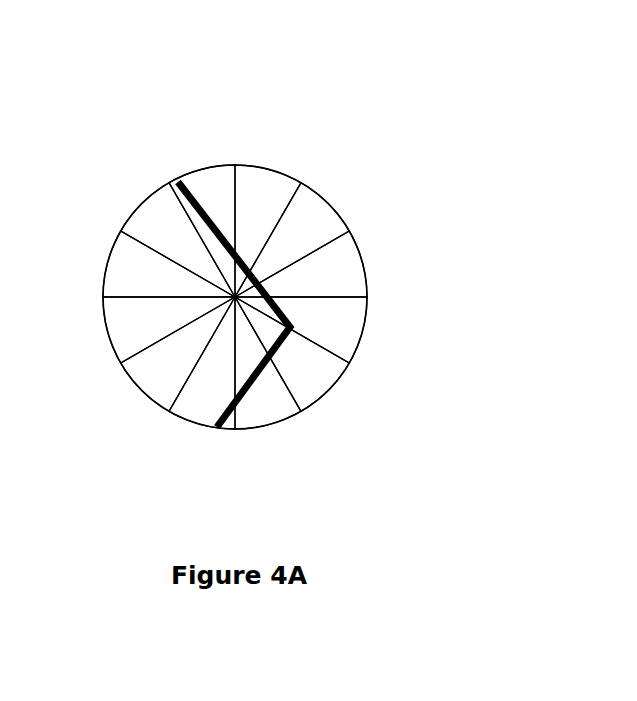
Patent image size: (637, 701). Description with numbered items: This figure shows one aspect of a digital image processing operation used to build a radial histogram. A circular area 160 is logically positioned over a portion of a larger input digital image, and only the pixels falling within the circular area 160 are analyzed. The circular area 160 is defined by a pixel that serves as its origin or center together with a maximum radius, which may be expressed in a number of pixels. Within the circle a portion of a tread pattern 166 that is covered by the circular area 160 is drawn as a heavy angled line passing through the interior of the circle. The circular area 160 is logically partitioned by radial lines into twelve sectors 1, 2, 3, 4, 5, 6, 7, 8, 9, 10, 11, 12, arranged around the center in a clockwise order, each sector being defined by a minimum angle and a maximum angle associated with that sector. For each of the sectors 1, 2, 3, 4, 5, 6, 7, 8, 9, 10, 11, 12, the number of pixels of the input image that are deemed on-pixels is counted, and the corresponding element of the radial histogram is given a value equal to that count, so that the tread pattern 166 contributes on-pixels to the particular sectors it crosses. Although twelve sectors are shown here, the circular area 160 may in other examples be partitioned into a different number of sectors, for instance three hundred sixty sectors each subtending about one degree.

The circular area 160 is at (111, 79).
The tread pattern 166 is at (290, 327).
The sector 1 is at (360, 248).
The sector 2 is at (333, 207).
The sector 3 is at (268, 167).
The sector 4 is at (194, 172).
The sector 5 is at (138, 203).
The sector 6 is at (108, 260).
The sector 7 is at (112, 330).
The sector 8 is at (135, 385).
The sector 9 is at (193, 425).
The sector 10 is at (260, 428).
The sector 11 is at (325, 397).
The sector 12 is at (362, 335).